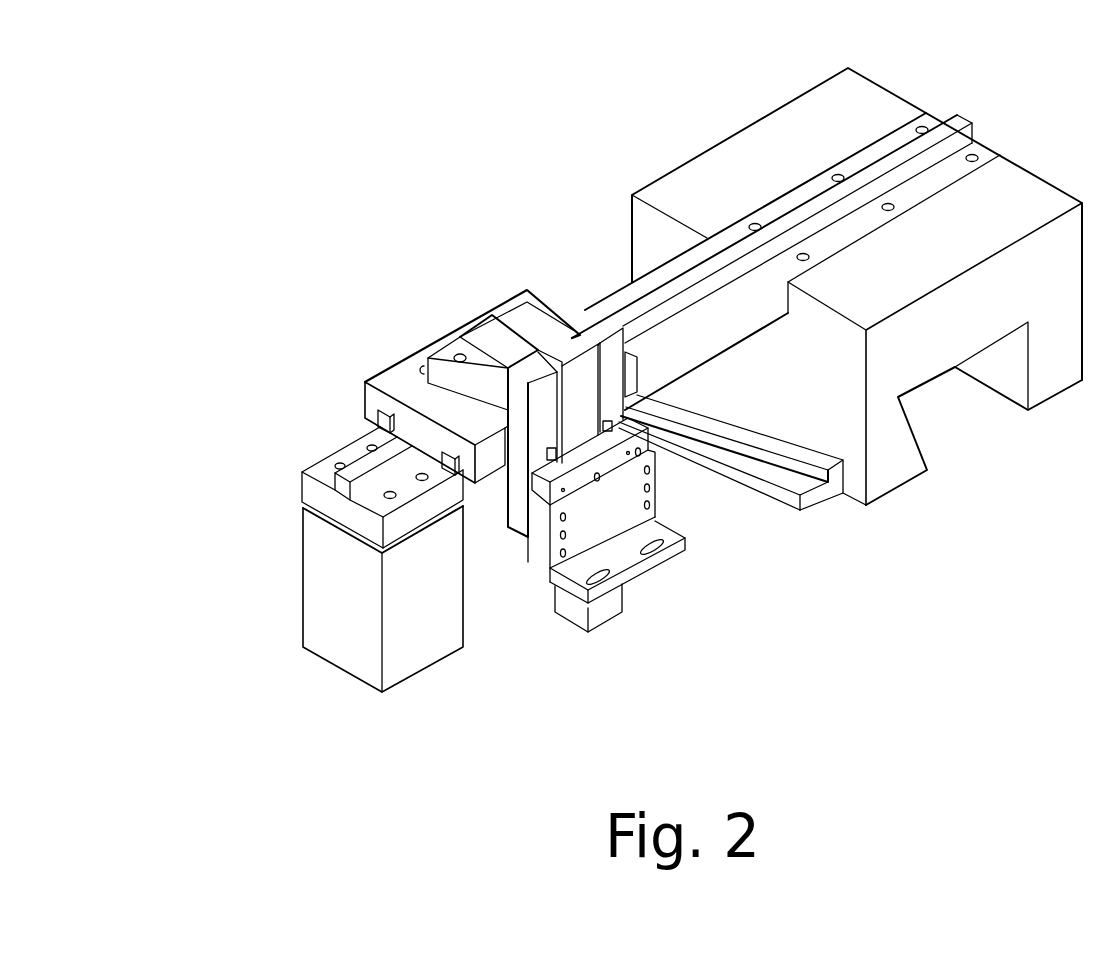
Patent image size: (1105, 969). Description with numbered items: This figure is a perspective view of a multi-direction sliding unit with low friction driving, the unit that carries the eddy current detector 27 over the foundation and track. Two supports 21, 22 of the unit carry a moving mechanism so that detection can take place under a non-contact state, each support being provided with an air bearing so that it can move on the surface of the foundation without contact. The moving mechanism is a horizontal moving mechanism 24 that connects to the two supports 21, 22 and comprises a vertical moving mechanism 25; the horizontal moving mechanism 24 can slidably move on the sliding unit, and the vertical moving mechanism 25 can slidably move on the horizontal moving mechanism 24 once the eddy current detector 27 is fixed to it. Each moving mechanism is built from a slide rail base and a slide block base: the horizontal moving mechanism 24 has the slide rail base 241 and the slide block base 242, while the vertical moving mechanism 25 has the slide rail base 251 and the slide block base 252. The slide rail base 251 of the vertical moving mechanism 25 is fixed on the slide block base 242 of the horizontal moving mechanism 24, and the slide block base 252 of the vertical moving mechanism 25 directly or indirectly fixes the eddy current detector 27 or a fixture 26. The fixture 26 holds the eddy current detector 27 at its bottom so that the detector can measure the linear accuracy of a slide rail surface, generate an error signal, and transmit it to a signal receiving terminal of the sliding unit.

The support 21 is at (747, 145).
The slide rail base 241 is at (960, 119).
The horizontal moving mechanism 24 is at (432, 334).
The slide block base 242 is at (400, 382).
The slide rail base 251 is at (555, 330).
The slide block base 252 is at (620, 458).
The support 22 is at (315, 575).
The vertical moving mechanism 25 is at (520, 543).
The fixture 26 is at (647, 557).
The eddy current detector 27 is at (600, 612).